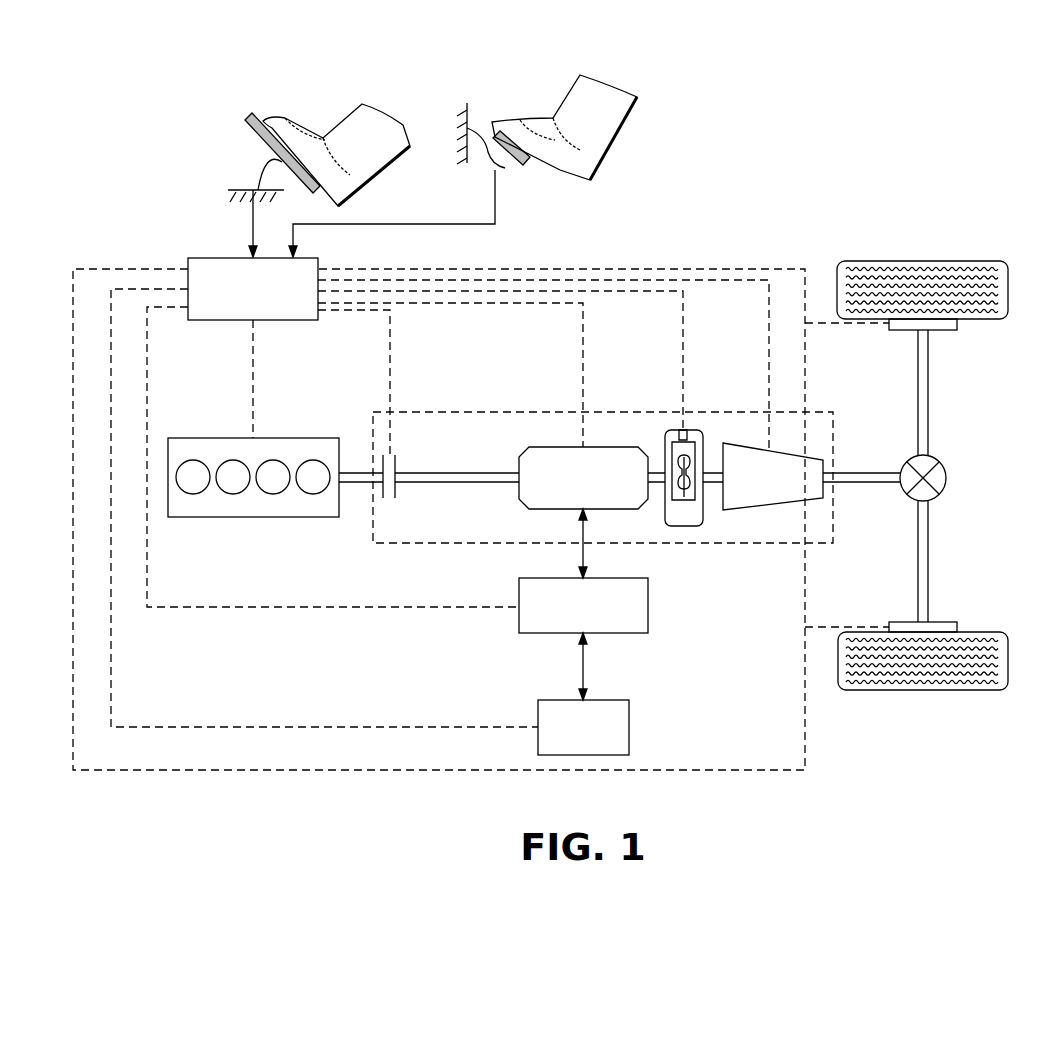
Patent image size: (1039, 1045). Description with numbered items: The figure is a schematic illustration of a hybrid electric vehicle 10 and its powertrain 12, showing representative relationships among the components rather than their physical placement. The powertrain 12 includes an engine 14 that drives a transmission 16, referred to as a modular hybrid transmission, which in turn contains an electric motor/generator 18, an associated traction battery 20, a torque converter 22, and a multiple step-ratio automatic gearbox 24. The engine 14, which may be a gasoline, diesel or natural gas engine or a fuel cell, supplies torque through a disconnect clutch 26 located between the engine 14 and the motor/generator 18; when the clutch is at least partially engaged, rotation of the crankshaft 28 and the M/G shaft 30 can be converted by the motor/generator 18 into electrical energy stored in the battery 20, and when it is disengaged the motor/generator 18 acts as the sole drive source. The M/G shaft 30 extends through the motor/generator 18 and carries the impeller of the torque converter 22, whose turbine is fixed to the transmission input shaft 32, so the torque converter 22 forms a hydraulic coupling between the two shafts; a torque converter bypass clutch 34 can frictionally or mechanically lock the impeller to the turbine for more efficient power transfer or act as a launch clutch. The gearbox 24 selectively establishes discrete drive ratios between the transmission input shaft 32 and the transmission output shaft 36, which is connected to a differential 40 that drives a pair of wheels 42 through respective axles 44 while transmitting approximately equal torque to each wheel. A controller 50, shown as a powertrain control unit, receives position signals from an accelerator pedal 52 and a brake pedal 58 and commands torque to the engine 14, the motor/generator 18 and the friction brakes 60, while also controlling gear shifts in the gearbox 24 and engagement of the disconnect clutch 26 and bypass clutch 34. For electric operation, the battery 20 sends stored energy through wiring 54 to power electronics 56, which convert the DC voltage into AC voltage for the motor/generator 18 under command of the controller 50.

The hybrid electric vehicle 10 is at (712, 190).
The powertrain 12 is at (385, 627).
The engine 14 is at (200, 438).
The transmission 16 is at (652, 412).
The electric motor/generator 18 is at (556, 447).
The traction battery 20 is at (629, 727).
The torque converter 22 is at (680, 526).
The gearbox 24 is at (773, 510).
The disconnect clutch 26 is at (398, 465).
The crankshaft 28 is at (370, 468).
The M/G shaft 30 is at (470, 472).
The transmission input shaft 32 is at (714, 472).
The torque converter bypass clutch 34 is at (683, 430).
The transmission output shaft 36 is at (872, 472).
The differential 40 is at (947, 480).
The wheels 42 is at (923, 261).
The axles 44 is at (930, 392).
The controller 50 is at (222, 258).
The accelerator pedal 52 is at (258, 148).
The wiring 54 is at (585, 672).
The power electronics 56 is at (648, 607).
The brake pedal 58 is at (530, 165).
The friction brakes 60 is at (957, 325).